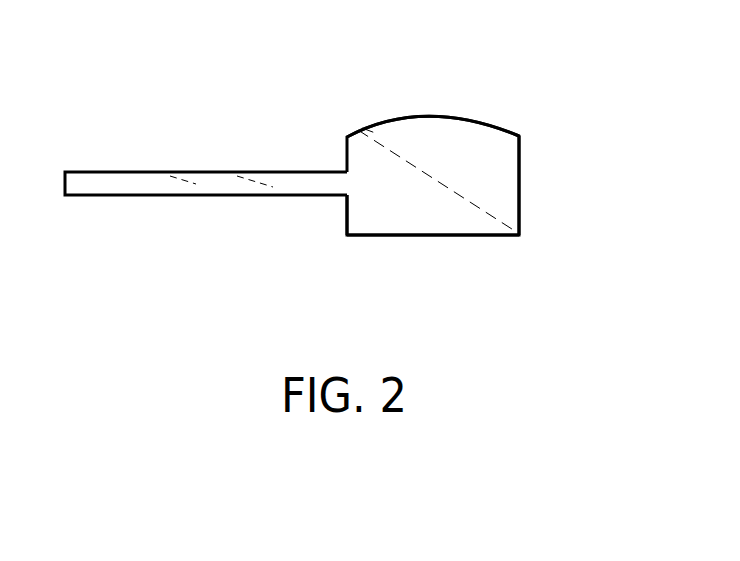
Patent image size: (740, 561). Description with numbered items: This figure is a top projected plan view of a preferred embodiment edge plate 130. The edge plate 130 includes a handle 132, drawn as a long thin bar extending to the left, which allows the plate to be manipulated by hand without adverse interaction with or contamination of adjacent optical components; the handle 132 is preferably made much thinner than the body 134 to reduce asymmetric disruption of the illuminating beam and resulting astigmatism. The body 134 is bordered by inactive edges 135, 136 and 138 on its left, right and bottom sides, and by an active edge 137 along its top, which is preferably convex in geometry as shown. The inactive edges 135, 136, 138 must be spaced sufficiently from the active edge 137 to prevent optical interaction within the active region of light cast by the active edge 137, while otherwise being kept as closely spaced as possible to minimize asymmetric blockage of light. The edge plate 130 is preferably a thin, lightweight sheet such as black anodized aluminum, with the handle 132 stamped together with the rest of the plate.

The edge plate 130 is at (212, 68).
The handle 132 is at (137, 188).
The body 134 is at (470, 163).
The inactive edge 135 is at (346, 210).
The inactive edge 136 is at (519, 203).
The active edge 137 is at (445, 118).
The inactive edge 138 is at (392, 235).